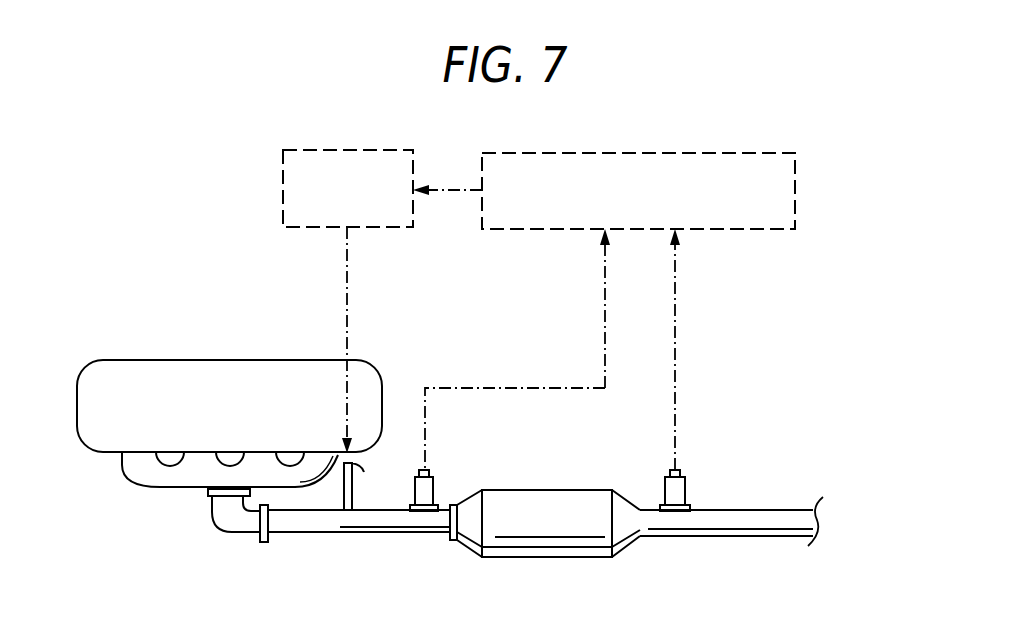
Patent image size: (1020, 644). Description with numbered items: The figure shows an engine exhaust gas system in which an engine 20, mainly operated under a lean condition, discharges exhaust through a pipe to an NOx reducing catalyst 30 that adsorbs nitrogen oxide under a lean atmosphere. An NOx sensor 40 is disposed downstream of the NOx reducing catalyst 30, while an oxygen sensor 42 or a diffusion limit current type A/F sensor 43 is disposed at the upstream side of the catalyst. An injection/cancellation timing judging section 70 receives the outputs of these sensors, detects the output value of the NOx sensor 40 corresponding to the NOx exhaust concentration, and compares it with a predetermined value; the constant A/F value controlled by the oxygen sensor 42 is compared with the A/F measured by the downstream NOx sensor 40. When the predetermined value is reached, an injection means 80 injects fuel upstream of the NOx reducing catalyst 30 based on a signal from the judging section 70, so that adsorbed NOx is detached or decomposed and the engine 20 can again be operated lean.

The engine 20 is at (165, 375).
The NOx reducing catalyst 30 is at (540, 557).
The NOx sensor 40 is at (682, 493).
The oxygen sensor 42 is at (466, 473).
The diffusion limit current type A/F sensor 43 is at (434, 490).
The injection/cancellation timing judging section 70 is at (750, 229).
The injection means 80 is at (393, 224).